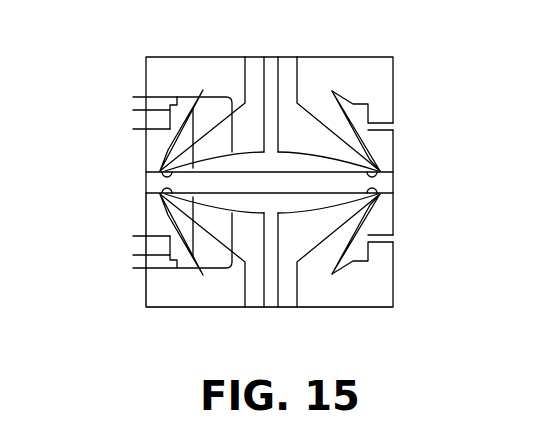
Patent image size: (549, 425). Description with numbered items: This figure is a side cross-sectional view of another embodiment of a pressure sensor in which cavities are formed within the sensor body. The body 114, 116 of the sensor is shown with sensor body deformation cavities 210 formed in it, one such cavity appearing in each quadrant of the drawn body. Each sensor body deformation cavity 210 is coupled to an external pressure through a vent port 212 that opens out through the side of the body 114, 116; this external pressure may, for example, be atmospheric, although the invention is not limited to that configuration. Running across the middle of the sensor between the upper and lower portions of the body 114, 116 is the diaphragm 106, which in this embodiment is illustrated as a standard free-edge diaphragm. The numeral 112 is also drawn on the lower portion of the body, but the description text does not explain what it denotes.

The diaphragm 106 is at (212, 188).
The lower substrate 112 is at (362, 300).
The body 114 is at (317, 65).
The body 116 is at (187, 65).
The sensor body deformation cavity 210 is at (181, 103).
The vent port 212 is at (160, 129).